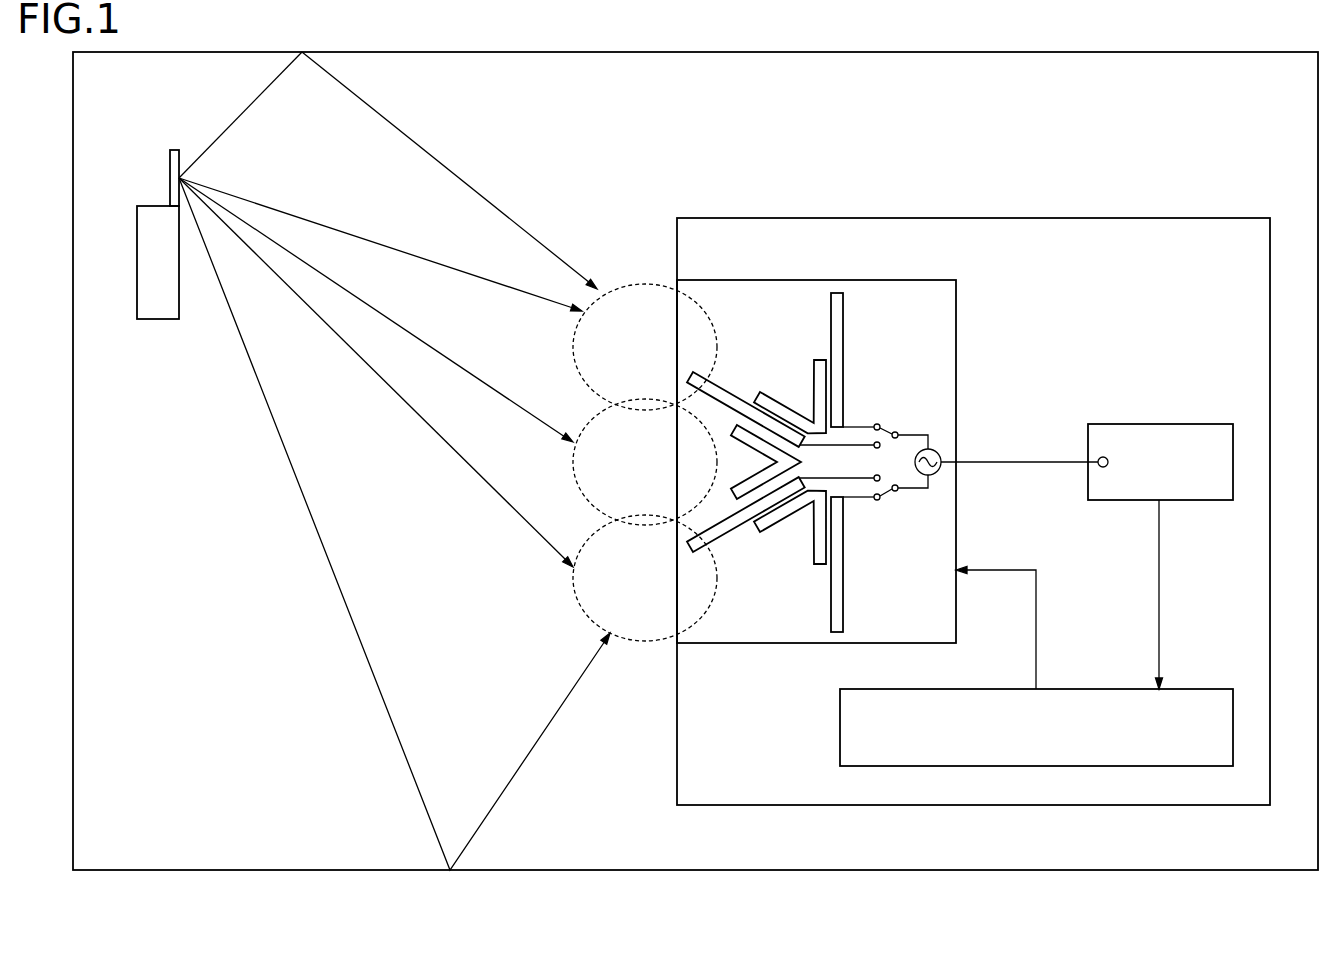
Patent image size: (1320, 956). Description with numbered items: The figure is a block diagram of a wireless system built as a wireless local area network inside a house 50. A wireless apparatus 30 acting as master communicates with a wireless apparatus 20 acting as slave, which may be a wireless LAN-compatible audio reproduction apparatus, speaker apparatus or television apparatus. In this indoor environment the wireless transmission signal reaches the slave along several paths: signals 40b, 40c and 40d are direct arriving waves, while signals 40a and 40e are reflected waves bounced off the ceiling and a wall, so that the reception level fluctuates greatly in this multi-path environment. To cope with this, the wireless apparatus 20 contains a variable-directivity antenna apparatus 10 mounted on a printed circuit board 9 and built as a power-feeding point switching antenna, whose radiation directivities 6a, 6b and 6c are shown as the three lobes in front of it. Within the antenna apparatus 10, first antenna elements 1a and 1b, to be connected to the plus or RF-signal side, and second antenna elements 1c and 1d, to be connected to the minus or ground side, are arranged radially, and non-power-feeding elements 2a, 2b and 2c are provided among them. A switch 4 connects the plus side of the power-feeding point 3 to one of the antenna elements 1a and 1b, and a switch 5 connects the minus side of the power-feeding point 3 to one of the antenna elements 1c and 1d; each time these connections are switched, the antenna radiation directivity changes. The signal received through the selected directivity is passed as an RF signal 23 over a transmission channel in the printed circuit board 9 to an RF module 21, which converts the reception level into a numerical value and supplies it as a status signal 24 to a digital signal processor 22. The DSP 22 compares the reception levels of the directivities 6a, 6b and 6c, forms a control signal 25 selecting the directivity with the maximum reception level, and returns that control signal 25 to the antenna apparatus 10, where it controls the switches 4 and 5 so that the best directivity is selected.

The house 50 is at (929, 52).
The wireless apparatus 30 is at (157, 319).
The signal 40a is at (458, 178).
The signal 40b is at (382, 243).
The signal 40c is at (370, 305).
The signal 40d is at (351, 350).
The signal 40e is at (287, 455).
The antenna radiation directivity 6a is at (641, 638).
The antenna radiation directivity 6b is at (573, 462).
The antenna radiation directivity 6c is at (637, 282).
The wireless apparatus 20 is at (1078, 218).
The printed circuit board 9 is at (905, 280).
The antenna apparatus 10 is at (844, 462).
The first antenna element 1a is at (831, 612).
The first antenna element 1b is at (735, 530).
The second antenna element 1c is at (735, 393).
The second antenna element 1d is at (831, 300).
The non-power-feeding element 2a is at (778, 524).
The non-power-feeding element 2b is at (747, 441).
The non-power-feeding element 2c is at (778, 400).
The power-feeding point 3 is at (934, 479).
The switch 4 is at (880, 500).
The switch 5 is at (879, 425).
The RF module 21 is at (1188, 424).
The digital signal processor (DSP) 22 is at (1200, 689).
The RF signal 23 is at (1030, 462).
The status signal 24 is at (1160, 598).
The control signal 25 is at (1037, 620).